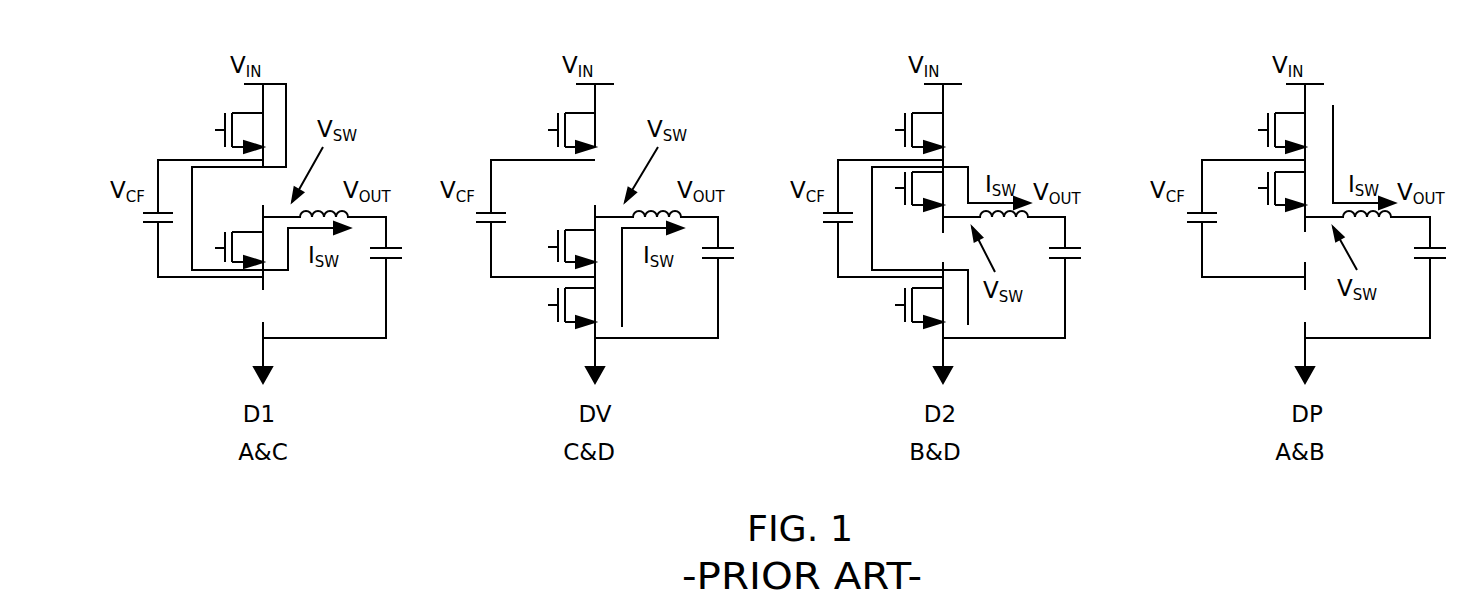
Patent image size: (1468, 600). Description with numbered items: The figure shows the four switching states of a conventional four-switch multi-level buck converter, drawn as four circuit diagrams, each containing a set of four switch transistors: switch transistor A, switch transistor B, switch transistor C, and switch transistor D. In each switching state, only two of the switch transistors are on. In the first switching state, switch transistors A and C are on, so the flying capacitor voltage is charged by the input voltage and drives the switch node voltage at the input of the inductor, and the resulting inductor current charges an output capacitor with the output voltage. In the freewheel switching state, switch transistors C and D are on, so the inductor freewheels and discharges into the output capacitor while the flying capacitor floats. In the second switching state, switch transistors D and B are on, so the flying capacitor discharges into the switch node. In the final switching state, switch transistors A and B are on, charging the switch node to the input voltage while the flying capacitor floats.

The switch transistor A is at (769, 133).
The switch transistor B is at (794, 191).
The switch transistor C is at (769, 249).
The switch transistor D is at (795, 308).